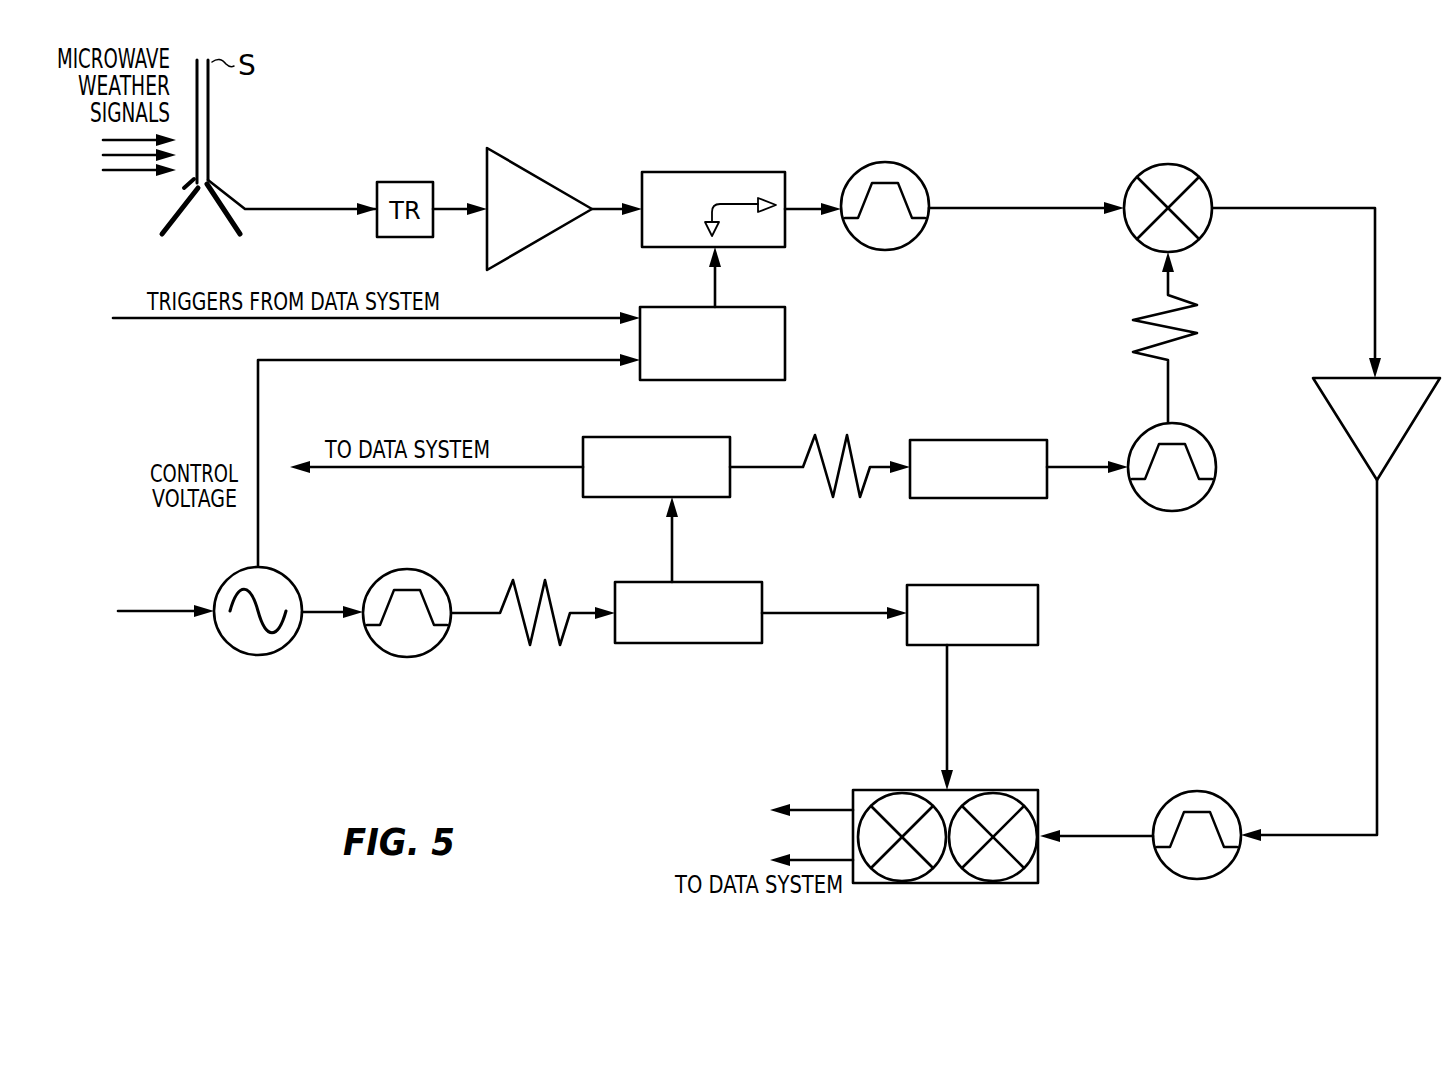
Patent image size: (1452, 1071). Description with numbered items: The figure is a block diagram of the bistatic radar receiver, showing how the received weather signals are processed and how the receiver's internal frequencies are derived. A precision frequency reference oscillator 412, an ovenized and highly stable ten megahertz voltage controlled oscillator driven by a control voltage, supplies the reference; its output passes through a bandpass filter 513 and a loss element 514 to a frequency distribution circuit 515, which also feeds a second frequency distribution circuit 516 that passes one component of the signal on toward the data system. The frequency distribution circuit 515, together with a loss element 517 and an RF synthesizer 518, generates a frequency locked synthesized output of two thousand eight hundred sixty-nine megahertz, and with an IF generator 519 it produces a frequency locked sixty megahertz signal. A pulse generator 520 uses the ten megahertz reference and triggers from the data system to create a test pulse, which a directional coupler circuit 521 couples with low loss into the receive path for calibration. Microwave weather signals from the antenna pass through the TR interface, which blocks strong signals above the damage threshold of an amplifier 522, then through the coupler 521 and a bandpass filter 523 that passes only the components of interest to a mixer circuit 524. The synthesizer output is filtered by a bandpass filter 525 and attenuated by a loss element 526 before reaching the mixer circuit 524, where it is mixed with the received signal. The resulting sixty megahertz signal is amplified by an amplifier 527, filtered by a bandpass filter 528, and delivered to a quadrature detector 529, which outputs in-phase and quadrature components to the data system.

The precision frequency reference oscillator 412 is at (226, 578).
The bandpass filter 513 is at (442, 570).
The loss element 514 is at (530, 647).
The frequency distribution circuit 515 is at (727, 645).
The frequency distribution circuit 516 is at (600, 435).
The loss element 517 is at (852, 437).
The RF synthesizer 518 is at (1008, 438).
The IF generator 519 is at (982, 583).
The pulse generator 520 is at (785, 321).
The directional coupler circuit 521 is at (722, 172).
The amplifier 522 is at (550, 178).
The bandpass filter 523 is at (920, 173).
The mixer circuit 524 is at (1193, 178).
The bandpass filter 525 is at (1195, 424).
The loss element 526 is at (1190, 298).
The amplifier 527 is at (1350, 442).
The bandpass filter 528 is at (1170, 792).
The quadrature detector 529 is at (1018, 790).